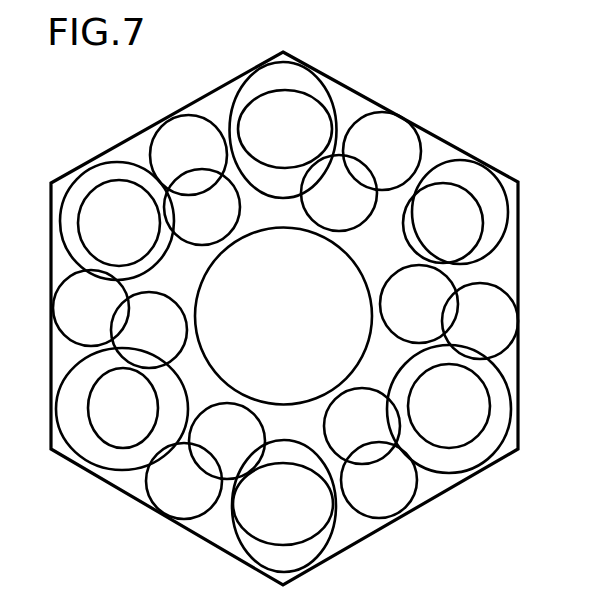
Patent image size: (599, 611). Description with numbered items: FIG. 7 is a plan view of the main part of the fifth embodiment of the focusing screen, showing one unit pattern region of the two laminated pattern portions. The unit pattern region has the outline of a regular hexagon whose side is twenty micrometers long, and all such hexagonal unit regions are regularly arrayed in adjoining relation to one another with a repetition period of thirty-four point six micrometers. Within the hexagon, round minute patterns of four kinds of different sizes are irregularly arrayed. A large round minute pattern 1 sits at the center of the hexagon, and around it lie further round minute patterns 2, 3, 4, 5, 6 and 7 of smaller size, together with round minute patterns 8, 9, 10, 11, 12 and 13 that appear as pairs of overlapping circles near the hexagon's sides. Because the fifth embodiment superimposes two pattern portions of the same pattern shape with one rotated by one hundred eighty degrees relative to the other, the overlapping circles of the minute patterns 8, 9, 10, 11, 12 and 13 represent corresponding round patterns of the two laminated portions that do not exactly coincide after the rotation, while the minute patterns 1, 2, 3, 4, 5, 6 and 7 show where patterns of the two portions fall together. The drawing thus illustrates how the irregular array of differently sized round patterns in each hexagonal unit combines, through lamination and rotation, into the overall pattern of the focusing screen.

The central element 1 is at (283, 316).
The element 2 is at (195, 180).
The element 3 is at (120, 319).
The element 4 is at (205, 461).
The element 5 is at (370, 453).
The element 6 is at (449, 312).
The element 7 is at (361, 171).
The element 8 is at (283, 130).
The element 9 is at (117, 221).
The element 10 is at (122, 409).
The element 11 is at (284, 506).
The element 12 is at (449, 409).
The element 13 is at (455, 212).